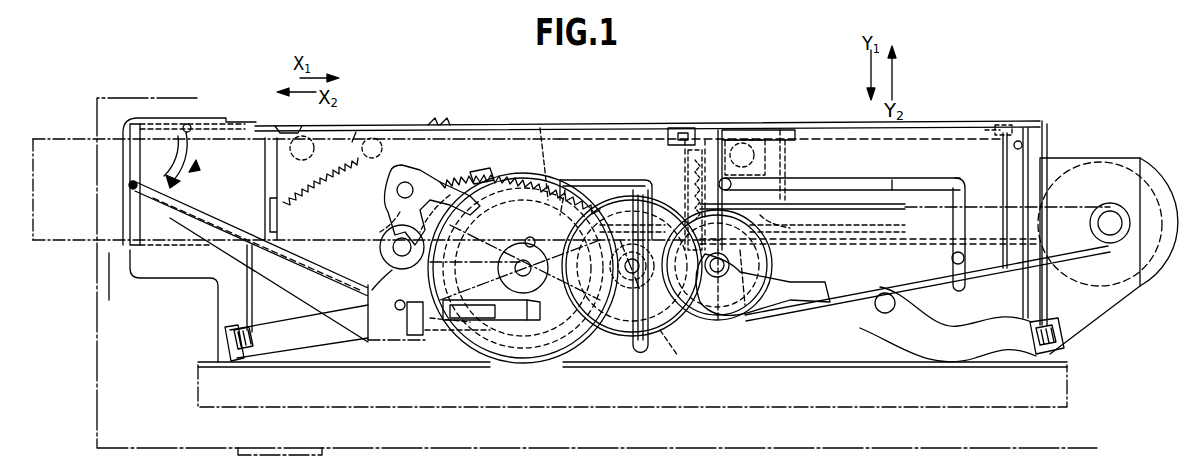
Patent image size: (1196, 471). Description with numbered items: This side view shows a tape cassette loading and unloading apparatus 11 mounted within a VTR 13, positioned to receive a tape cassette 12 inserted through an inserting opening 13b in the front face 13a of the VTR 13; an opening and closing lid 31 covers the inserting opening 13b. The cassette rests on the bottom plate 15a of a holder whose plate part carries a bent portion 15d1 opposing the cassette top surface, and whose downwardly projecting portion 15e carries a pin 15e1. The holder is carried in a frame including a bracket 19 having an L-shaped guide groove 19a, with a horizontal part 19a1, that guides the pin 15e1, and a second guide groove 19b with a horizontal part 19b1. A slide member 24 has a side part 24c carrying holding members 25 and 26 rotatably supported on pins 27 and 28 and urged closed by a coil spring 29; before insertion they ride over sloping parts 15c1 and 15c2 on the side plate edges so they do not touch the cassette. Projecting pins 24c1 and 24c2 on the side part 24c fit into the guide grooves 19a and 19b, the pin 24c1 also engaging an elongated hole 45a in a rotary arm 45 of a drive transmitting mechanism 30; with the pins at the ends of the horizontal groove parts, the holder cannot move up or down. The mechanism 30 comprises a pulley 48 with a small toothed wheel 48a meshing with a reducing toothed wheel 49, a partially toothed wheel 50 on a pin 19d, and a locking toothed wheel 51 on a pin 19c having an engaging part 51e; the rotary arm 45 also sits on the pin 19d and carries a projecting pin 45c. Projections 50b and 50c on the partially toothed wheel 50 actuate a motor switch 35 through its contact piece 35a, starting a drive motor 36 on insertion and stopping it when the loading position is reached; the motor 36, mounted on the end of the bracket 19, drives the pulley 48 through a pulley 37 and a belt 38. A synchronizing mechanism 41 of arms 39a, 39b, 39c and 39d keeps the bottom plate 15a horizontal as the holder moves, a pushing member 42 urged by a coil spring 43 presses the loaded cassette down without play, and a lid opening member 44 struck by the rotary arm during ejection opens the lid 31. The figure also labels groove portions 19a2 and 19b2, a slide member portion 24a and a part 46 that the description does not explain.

The tape cassette loading and unloading apparatus 11 is at (478, 124).
The tape cassette 12 is at (82, 138).
The magnetic recording and/or reproducing apparatus (VTR) 13 is at (152, 97).
The front face 13a is at (97, 302).
The inserting opening 13b is at (126, 188).
The bottom plate 15a is at (878, 248).
The sloping part 15c1 is at (728, 128).
The sloping part 15c2 is at (760, 266).
The bent portion 15d1 is at (1003, 125).
The downwardly projecting portion 15e is at (632, 246).
The pin 15e1 is at (690, 200).
The bracket 19 is at (535, 126).
The L-shaped guide groove 19a is at (604, 180).
The horizontal part 19a1 is at (566, 188).
The carriage arm lower pin 19a2 is at (672, 342).
The guide groove 19b is at (960, 178).
The horizontal part 19b1 is at (892, 178).
The carriage bar slot 19b2 is at (966, 278).
The pin 19c is at (380, 250).
The pin 19d is at (515, 266).
The slide member 24 is at (848, 220).
The drive arm 24a is at (310, 250).
The side part 24c is at (578, 138).
The projecting pin 24c1 is at (425, 178).
The projecting pin 24c2 is at (740, 180).
The holding member 25 is at (755, 130).
The holding member 26 is at (810, 218).
The pin 27 is at (785, 160).
The pin 28 is at (827, 228).
The coil spring 29 is at (685, 178).
The drive transmitting mechanism 30 is at (611, 358).
The opening and closing lid 31 is at (190, 124).
The motor switch 35 is at (418, 342).
The contact piece 35a is at (536, 320).
The drive motor 36 is at (1160, 168).
The pulley 37 is at (1105, 203).
The belt 38 is at (930, 205).
The arm 39a is at (336, 345).
The arm 39b is at (920, 350).
The arm 39c is at (238, 352).
The arm 39d is at (1040, 356).
The synchronizing mechanism 41 is at (835, 345).
The pushing member 42 is at (356, 134).
The coil spring 43 is at (300, 178).
The lid opening member 44 is at (290, 298).
The rotary arm 45 is at (445, 148).
The elongated hole 45a is at (520, 182).
The projecting pin 45c is at (603, 340).
The lever pin 46 is at (378, 290).
The pulley 48 is at (745, 320).
The small toothed wheel 48a is at (714, 320).
The reducing toothed wheel 49 is at (628, 345).
The partially toothed wheel 50 is at (513, 362).
The projection 50b is at (526, 352).
The projection 50c is at (528, 240).
The locking toothed wheel 51 is at (396, 320).
The engaging part 51e is at (372, 222).